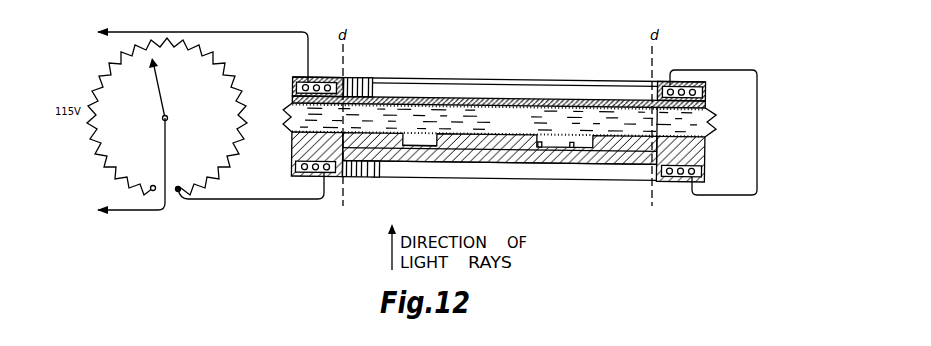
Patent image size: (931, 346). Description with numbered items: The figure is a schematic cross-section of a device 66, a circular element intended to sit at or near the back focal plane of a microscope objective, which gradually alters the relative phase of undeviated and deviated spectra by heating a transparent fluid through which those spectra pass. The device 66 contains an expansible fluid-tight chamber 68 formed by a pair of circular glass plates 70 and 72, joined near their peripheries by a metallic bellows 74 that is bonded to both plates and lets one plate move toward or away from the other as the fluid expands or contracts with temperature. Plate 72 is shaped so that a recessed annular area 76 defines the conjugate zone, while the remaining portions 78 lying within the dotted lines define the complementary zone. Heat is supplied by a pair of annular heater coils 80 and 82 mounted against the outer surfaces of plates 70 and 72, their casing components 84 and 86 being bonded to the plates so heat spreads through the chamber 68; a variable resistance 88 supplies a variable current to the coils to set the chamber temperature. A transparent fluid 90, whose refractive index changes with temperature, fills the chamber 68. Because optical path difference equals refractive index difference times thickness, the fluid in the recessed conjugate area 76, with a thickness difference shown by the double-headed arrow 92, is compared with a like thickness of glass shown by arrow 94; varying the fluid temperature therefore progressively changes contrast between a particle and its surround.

The device 66 is at (508, 72).
The expansible fluid-tight chamber 68 is at (479, 114).
The circular glass plate 70 is at (558, 96).
The circular glass plate 72 is at (598, 152).
The metallic bellows 74 is at (714, 131).
The recessed annular area 76 is at (424, 142).
The remaining portions 78 is at (375, 128).
The annular heater coil 80 is at (692, 84).
The annular heater coil 82 is at (671, 178).
The casing component 84 is at (703, 91).
The casing component 86 is at (703, 174).
The variable resistance 88 is at (228, 55).
The transparent fluid 90 is at (518, 127).
The double-headed arrow 92 is at (573, 146).
The arrow 94 is at (539, 146).